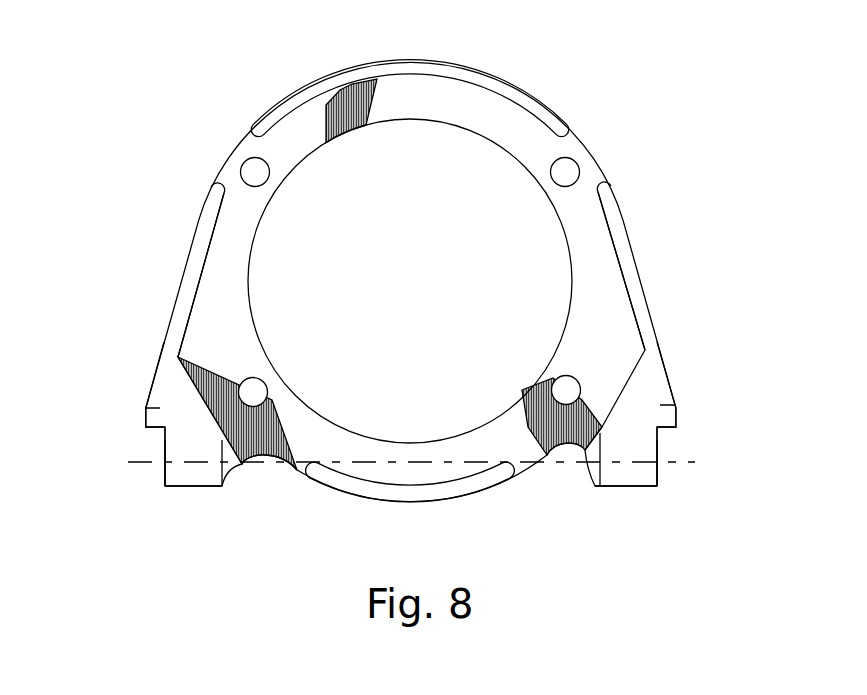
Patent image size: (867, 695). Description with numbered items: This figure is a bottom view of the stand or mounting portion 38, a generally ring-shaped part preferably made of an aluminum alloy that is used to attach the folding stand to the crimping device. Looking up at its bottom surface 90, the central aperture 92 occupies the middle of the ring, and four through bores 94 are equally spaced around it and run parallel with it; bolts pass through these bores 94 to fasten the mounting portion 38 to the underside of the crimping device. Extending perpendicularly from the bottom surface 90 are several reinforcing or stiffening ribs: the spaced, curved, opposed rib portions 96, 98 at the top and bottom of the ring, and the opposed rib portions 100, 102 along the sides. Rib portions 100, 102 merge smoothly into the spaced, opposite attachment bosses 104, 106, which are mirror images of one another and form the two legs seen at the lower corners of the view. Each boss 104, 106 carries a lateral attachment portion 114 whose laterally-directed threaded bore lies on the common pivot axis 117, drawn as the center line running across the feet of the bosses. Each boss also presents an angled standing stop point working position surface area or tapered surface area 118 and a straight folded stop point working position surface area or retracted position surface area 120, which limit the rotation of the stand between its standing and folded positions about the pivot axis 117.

The mounting portion 38 is at (659, 96).
The bottom surface 90 is at (473, 108).
The central aperture 92 is at (267, 208).
The through bores 94 is at (240, 172).
The rib portion 96 is at (367, 487).
The rib portion 98 is at (443, 75).
The rib portion 100 is at (640, 272).
The rib portion 102 is at (184, 291).
The attachment boss 104 is at (633, 492).
The attachment boss 106 is at (203, 492).
The lateral attachment portion 114 is at (166, 451).
The pivot axis 117 is at (673, 462).
The standing stop point working position surface area 118 is at (160, 408).
The folded stop point working position surface area 120 is at (166, 432).